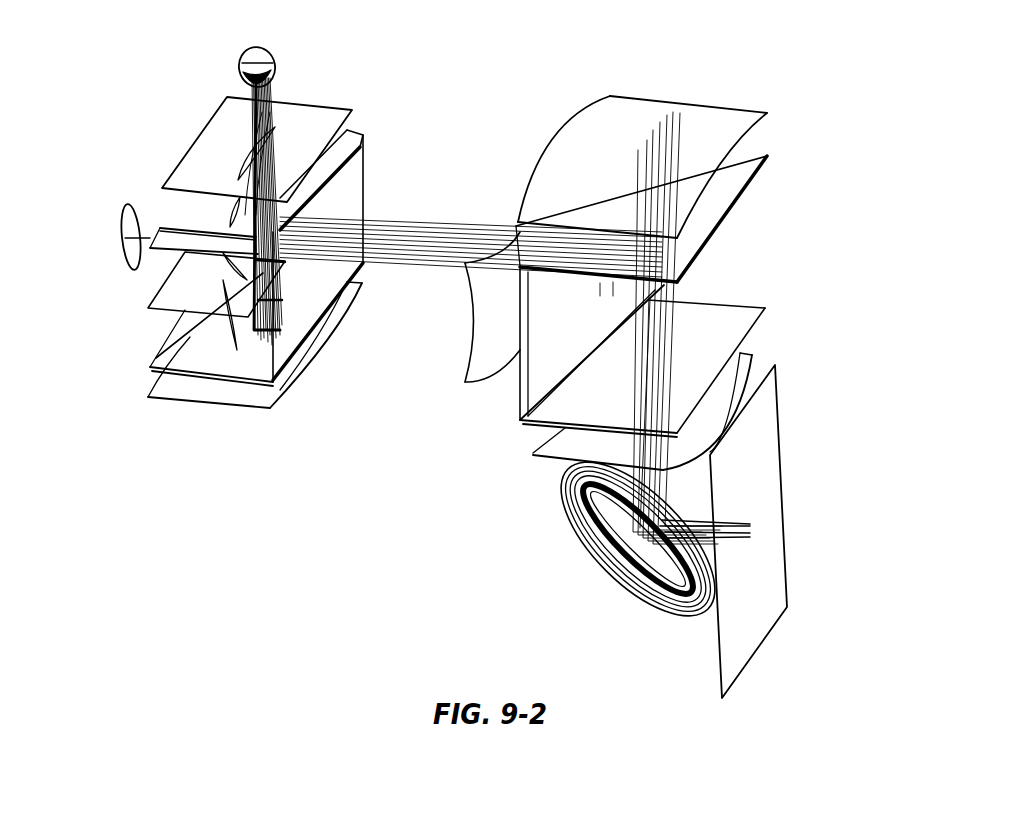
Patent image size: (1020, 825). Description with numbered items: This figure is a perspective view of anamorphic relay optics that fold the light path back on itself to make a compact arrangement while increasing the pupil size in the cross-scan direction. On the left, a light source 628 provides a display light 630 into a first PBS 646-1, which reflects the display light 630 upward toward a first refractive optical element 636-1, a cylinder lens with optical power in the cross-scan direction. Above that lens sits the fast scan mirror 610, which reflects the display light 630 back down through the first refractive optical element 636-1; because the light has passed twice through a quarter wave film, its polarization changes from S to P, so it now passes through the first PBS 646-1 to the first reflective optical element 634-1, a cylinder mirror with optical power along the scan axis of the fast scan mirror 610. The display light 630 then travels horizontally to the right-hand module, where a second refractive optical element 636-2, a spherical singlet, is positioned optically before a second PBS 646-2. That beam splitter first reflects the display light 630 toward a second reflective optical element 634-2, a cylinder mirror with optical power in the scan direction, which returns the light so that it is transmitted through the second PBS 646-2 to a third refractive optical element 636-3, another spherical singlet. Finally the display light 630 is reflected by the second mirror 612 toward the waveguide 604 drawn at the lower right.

The waveguide 604 is at (778, 463).
The fast scan mirror 610 is at (275, 58).
The second mirror 612 is at (565, 522).
The light source 628 is at (124, 222).
The display light 630 is at (140, 248).
The first reflective optical element 634-1 is at (283, 395).
The second reflective optical element 634-2 is at (720, 122).
The first refractive optical element 636-1 is at (288, 113).
The second refractive optical element 636-2 is at (533, 180).
The third refractive optical element 636-3 is at (530, 456).
The first PBS 646-1 is at (150, 367).
The second PBS 646-2 is at (518, 400).